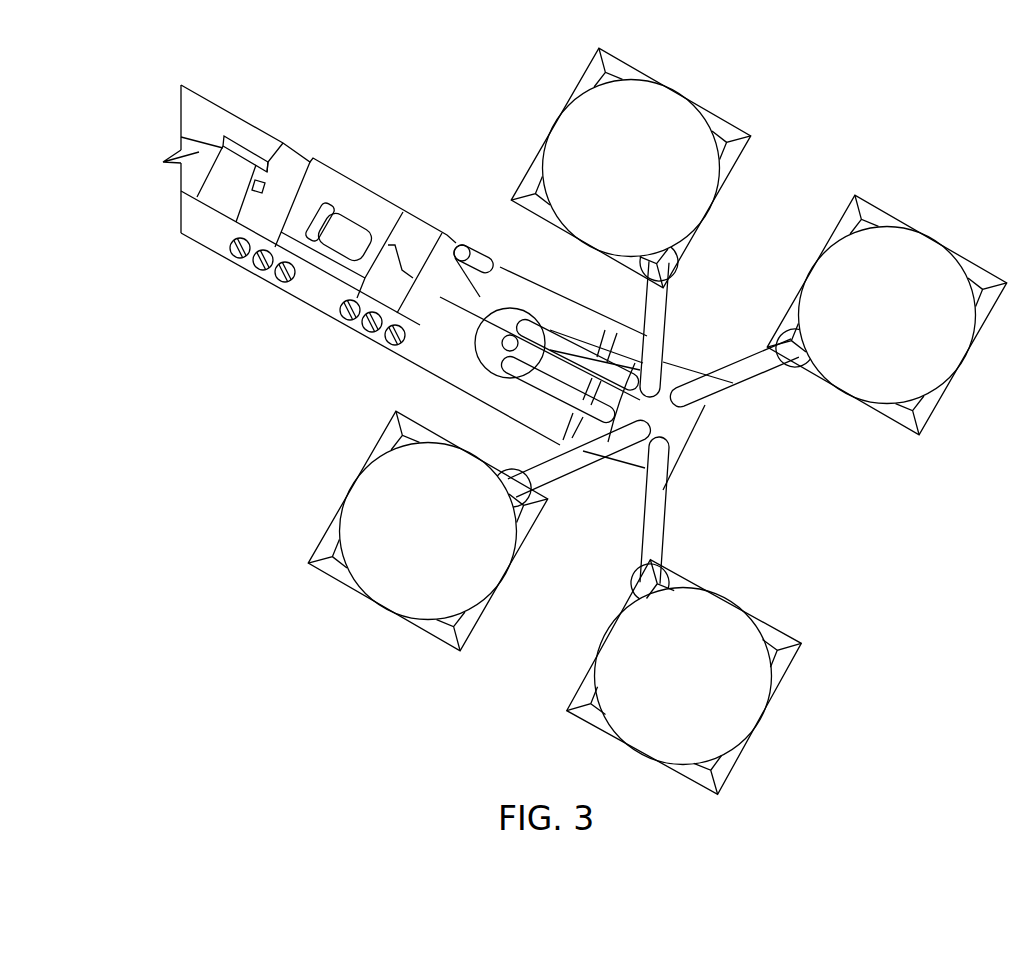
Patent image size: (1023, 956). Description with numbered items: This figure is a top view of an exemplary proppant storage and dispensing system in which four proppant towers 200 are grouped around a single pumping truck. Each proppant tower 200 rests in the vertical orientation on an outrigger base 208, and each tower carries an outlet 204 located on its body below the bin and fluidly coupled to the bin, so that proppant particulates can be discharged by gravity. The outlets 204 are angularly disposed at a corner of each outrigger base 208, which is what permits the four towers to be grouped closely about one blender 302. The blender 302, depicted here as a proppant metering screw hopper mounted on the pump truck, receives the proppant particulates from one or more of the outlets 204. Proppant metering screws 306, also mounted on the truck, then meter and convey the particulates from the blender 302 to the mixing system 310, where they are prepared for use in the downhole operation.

The proppant tower 200 is at (651, 185).
The outlet 204 is at (667, 308).
The outrigger base 208 is at (733, 122).
The blender 302 is at (668, 433).
The proppant metering screws 306 is at (588, 350).
The mixing system 310 is at (506, 343).